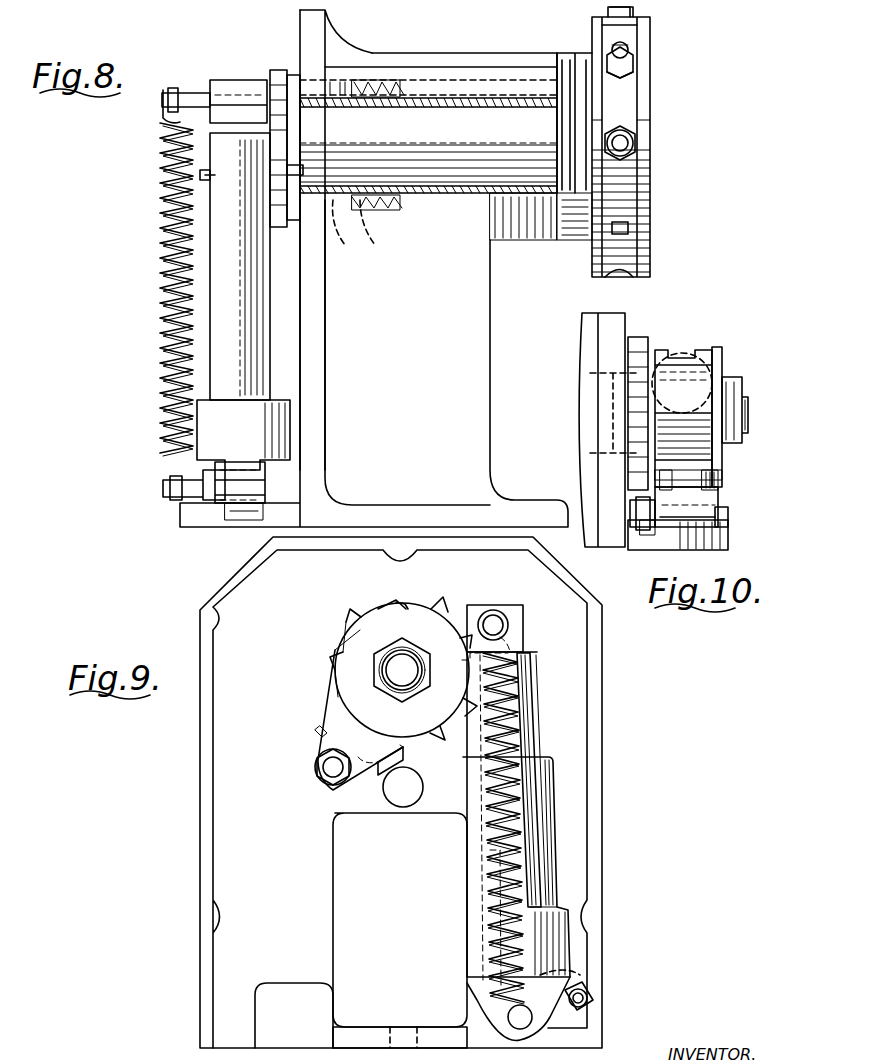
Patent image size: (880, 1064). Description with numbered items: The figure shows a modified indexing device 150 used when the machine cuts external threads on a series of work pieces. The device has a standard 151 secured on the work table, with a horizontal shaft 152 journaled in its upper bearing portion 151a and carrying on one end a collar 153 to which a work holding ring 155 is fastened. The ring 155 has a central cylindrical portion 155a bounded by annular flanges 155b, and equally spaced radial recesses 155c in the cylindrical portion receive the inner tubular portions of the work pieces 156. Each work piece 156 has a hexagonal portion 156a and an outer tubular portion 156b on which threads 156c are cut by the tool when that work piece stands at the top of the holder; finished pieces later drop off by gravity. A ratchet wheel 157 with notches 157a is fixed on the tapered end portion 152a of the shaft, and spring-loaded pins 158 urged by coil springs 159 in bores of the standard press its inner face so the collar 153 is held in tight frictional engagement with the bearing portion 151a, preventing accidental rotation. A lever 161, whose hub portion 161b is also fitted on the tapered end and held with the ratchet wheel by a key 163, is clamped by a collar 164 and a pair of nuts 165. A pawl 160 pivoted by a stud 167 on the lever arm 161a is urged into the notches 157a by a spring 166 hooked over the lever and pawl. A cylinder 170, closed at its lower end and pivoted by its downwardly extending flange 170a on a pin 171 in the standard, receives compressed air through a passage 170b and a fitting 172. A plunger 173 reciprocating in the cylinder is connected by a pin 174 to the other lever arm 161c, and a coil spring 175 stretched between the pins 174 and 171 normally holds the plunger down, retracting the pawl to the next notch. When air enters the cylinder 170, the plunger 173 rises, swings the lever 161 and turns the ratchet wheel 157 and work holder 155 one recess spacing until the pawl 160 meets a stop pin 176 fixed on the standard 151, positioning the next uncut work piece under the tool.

In FIG. 8, the indexing device 150 is at (498, 355).
In FIG. 8, the standard 151 is at (468, 418).
In FIG. 10, the standard 151 is at (612, 547).
In FIG. 9, the standard 151 is at (592, 768).
In FIG. 8, the bearing portion 151a is at (530, 215).
In FIG. 8, the shaft 152 is at (470, 115).
In FIG. 10, the shaft 152 is at (600, 460).
In FIG. 9, the shaft 152 is at (400, 662).
In FIG. 10, the end portion of the shaft 152a is at (690, 360).
In FIG. 8, the collar 153 is at (581, 58).
In FIG. 8, the work holding ring 155 is at (645, 80).
In FIG. 8, the central cylindrical portion 155a is at (620, 183).
In FIG. 8, the annular flanges 155b is at (598, 110).
In FIG. 8, the radial recesses 155c is at (652, 275).
In FIG. 8, the work piece 156 is at (630, 50).
In FIG. 8, the hexagonal portion 156a is at (635, 68).
In FIG. 8, the outer tubular portion 156b is at (625, 45).
In FIG. 8, the threads 156c is at (606, 15).
In FIG. 8, the ratchet wheel 157 is at (278, 68).
In FIG. 10, the ratchet wheel 157 is at (645, 335).
In FIG. 9, the ratchet wheel 157 is at (380, 600).
In FIG. 8, the notches 157a is at (280, 140).
In FIG. 9, the notches 157a is at (405, 605).
In FIG. 8, the pins 158 is at (307, 90).
In FIG. 8, the coil springs 159 is at (368, 78).
In FIG. 8, the pawl 160 is at (208, 193).
In FIG. 10, the pawl 160 is at (700, 355).
In FIG. 9, the pawl 160 is at (380, 775).
In FIG. 10, the lever 161 is at (675, 348).
In FIG. 10, the arm of the lever 161a is at (705, 492).
In FIG. 9, the arm of the lever 161a is at (330, 710).
In FIG. 10, the hub portion 161b is at (700, 460).
In FIG. 8, the arm of the actuating lever 161c is at (238, 85).
In FIG. 9, the arm of the actuating lever 161c is at (455, 600).
In FIG. 10, the key 163 is at (720, 370).
In FIG. 9, the collar 164 is at (352, 645).
In FIG. 8, the nuts 165 is at (200, 92).
In FIG. 10, the nuts 165 is at (735, 378).
In FIG. 9, the nuts 165 is at (432, 675).
In FIG. 10, the spring 166 is at (650, 540).
In FIG. 9, the spring 166 is at (317, 728).
In FIG. 10, the stud 167 is at (730, 512).
In FIG. 9, the stud 167 is at (328, 777).
In FIG. 8, the cylinder 170 is at (243, 391).
In FIG. 10, the cylinder 170 is at (730, 548).
In FIG. 9, the cylinder 170 is at (550, 855).
In FIG. 8, the downwardly extending flange 170a is at (232, 520).
In FIG. 9, the downwardly extending flange 170a is at (480, 1010).
In FIG. 9, the passage 170b is at (580, 975).
In FIG. 8, the pin 171 is at (165, 497).
In FIG. 9, the pin 171 is at (525, 1020).
In FIG. 8, the fitting 172 is at (200, 500).
In FIG. 9, the fitting 172 is at (588, 998).
In FIG. 8, the plunger 173 is at (222, 215).
In FIG. 10, the plunger 173 is at (722, 483).
In FIG. 9, the plunger 173 is at (532, 723).
In FIG. 8, the pin 174 is at (163, 105).
In FIG. 9, the pin 174 is at (508, 622).
In FIG. 8, the coil spring 175 is at (160, 310).
In FIG. 9, the coil spring 175 is at (522, 668).
In FIG. 8, the stop pin 176 is at (300, 272).
In FIG. 9, the stop pin 176 is at (420, 782).